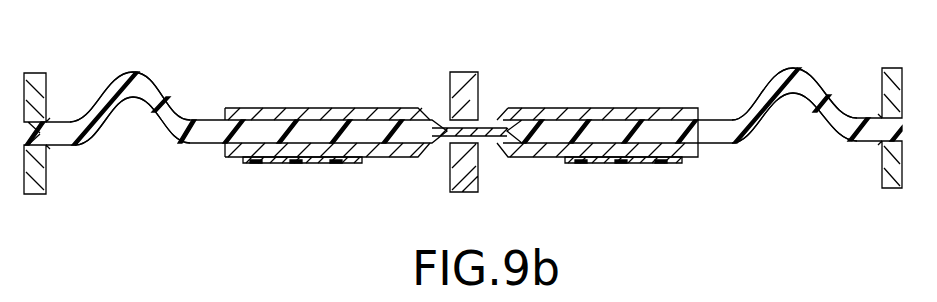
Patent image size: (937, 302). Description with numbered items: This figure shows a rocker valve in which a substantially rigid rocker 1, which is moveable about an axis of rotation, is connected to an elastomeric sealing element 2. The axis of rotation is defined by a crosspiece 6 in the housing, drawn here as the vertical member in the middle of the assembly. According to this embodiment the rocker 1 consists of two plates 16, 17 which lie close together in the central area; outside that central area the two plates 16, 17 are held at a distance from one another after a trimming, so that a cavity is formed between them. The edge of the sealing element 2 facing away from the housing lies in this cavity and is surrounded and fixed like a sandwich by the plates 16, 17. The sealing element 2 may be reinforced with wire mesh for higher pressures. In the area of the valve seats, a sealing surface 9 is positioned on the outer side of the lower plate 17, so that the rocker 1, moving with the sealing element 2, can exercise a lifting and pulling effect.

The rocker 1 is at (545, 107).
The sealing element 2 is at (152, 93).
The crosspiece 6 is at (468, 90).
The sealing surface 9 is at (295, 163).
The plate 16 is at (617, 107).
The lower plate 17 is at (405, 152).